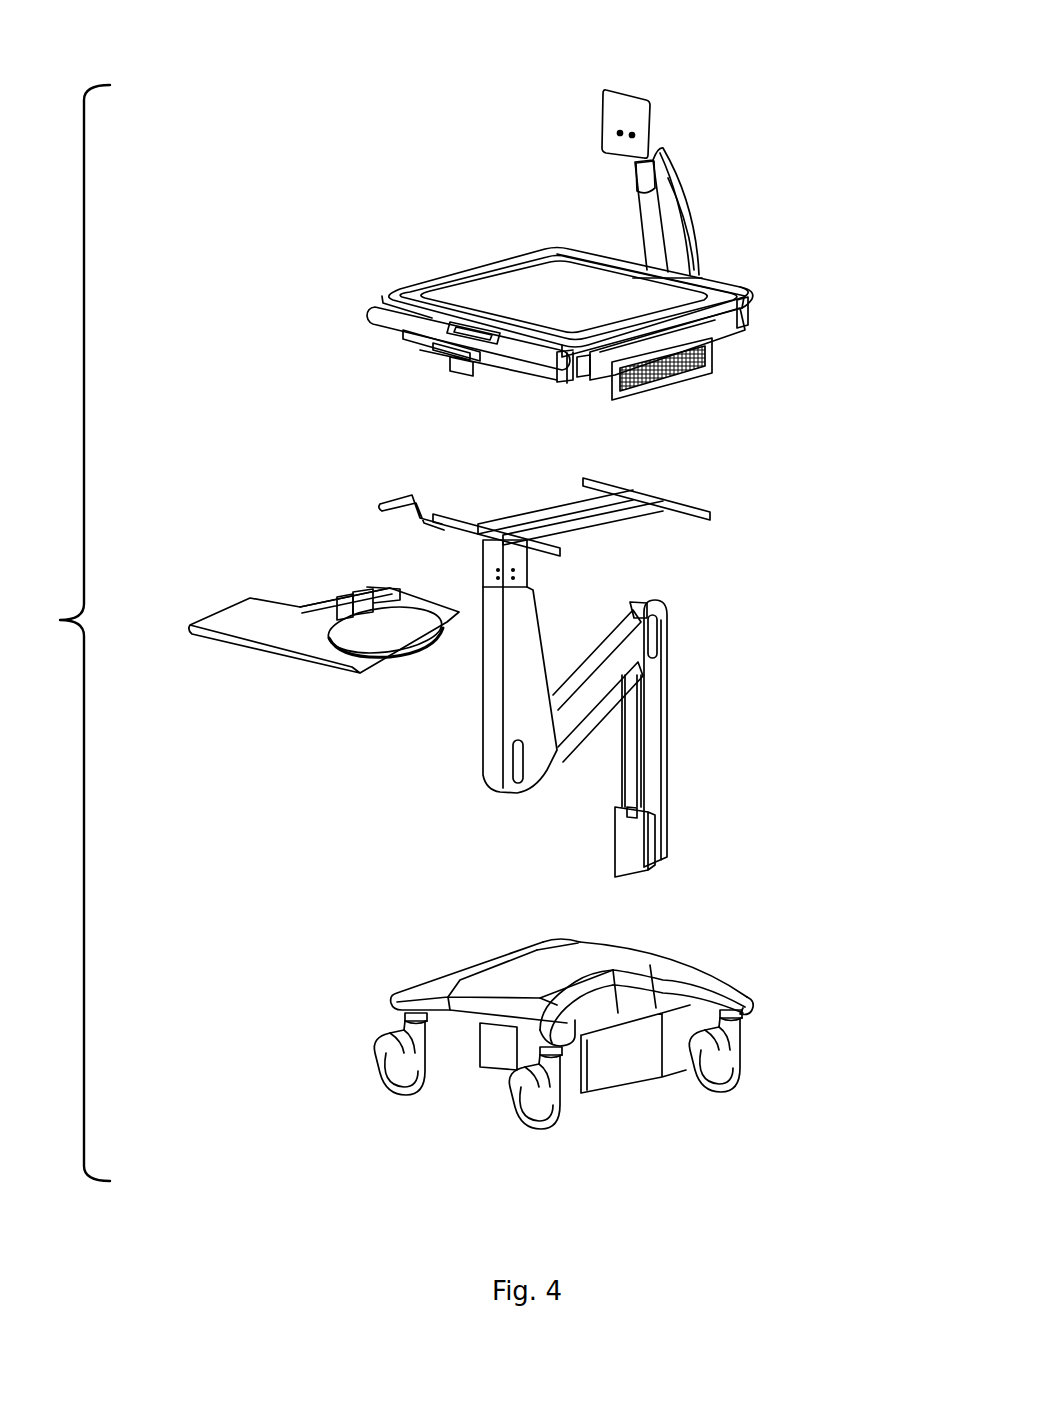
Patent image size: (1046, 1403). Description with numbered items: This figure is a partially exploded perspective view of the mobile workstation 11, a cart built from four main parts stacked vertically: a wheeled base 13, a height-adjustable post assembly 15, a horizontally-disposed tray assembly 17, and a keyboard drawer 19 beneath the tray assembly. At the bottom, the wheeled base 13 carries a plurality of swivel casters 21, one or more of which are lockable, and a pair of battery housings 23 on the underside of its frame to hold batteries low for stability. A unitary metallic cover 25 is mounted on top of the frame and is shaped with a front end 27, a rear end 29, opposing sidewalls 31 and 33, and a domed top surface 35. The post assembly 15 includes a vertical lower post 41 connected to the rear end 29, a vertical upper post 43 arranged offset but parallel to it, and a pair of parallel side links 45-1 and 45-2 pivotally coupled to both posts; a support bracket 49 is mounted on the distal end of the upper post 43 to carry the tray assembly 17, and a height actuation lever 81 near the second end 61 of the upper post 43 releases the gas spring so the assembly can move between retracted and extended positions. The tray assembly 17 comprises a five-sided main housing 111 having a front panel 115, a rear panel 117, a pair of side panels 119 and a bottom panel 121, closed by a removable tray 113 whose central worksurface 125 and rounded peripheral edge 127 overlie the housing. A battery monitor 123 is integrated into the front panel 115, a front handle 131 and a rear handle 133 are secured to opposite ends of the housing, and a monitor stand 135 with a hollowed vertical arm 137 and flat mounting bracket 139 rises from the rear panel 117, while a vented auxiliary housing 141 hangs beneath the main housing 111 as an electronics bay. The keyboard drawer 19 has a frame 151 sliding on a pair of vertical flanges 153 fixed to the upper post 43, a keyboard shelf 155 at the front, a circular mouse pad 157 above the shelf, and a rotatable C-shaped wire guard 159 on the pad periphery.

The mobile workstation 11 is at (10, 634).
The wheeled base 13 is at (564, 1018).
The height-adjustable post assembly 15 is at (599, 660).
The tray assembly 17 is at (574, 226).
The keyboard drawer 19 is at (276, 620).
The swivel casters 21 is at (520, 1107).
The battery housings 23 is at (595, 1085).
The cover 25 is at (748, 1005).
The front end 27 is at (462, 998).
The rear end 29 is at (672, 962).
The sidewall 31 is at (458, 967).
The sidewall 33 is at (630, 1005).
The domed top surface 35 is at (535, 968).
The lower post 41 is at (665, 688).
The upper post 43 is at (480, 572).
The linking post 45-1 is at (605, 636).
The linking post 45-2 is at (607, 693).
The support bracket 49 is at (712, 517).
The second end 61 is at (530, 567).
The height actuation lever 81 is at (386, 505).
The main housing 111 is at (717, 333).
The tray 113 is at (405, 291).
The front panel 115 is at (540, 365).
The rear panel 117 is at (740, 320).
The side panels 119 is at (544, 249).
The bottom panel 121 is at (573, 378).
The battery monitor 123 is at (455, 320).
The worksurface 125 is at (512, 283).
The rounded peripheral edge 127 is at (393, 308).
The front handle 131 is at (390, 320).
The rear handle 133 is at (757, 297).
The monitor stand 135 is at (668, 163).
The vertical arm 137 is at (695, 237).
The mounting bracket 139 is at (617, 99).
The auxiliary housing 141 is at (700, 390).
The frame 151 is at (322, 603).
The vertical flanges 153 is at (350, 605).
The keyboard shelf 155 is at (213, 637).
The circular mouse pad 157 is at (363, 640).
The wire guard 159 is at (392, 645).